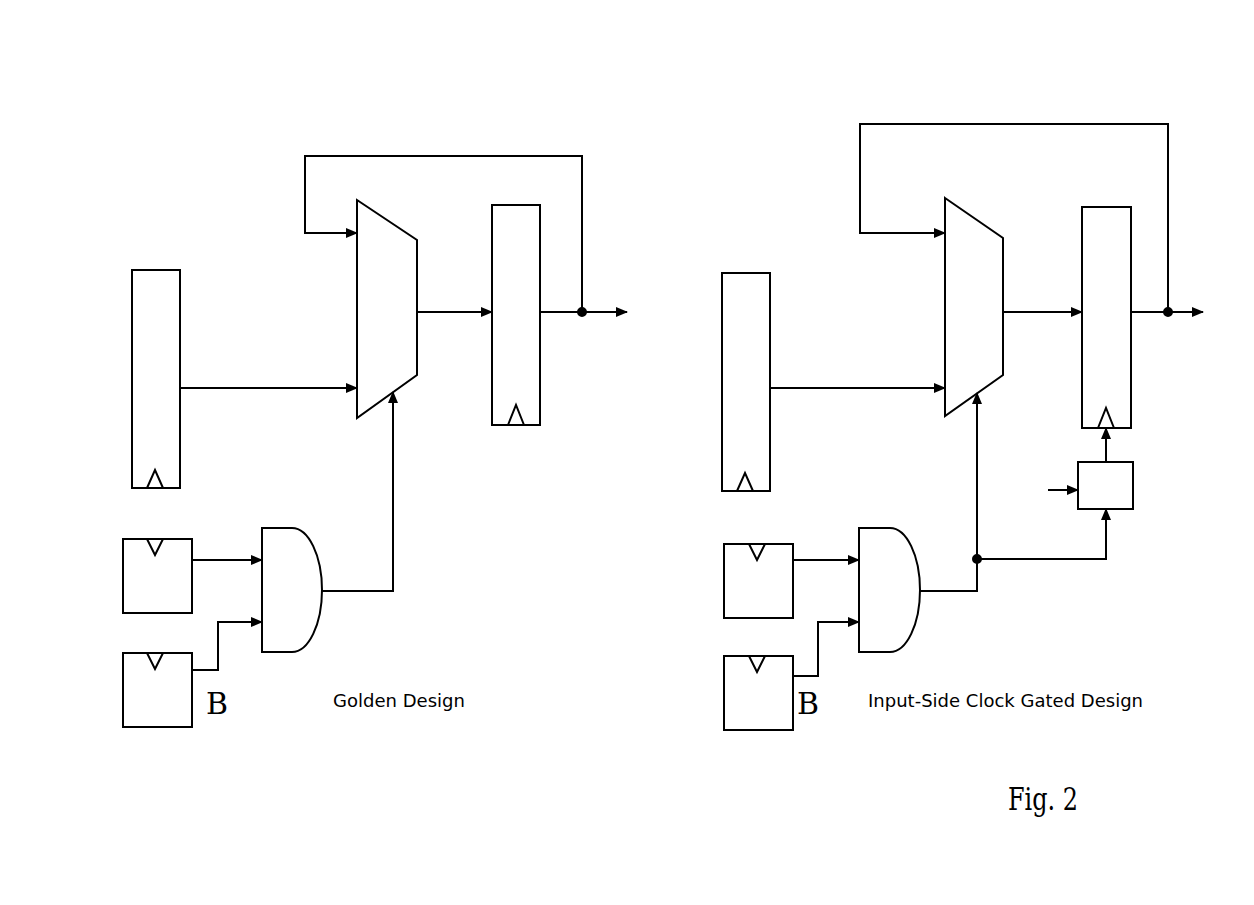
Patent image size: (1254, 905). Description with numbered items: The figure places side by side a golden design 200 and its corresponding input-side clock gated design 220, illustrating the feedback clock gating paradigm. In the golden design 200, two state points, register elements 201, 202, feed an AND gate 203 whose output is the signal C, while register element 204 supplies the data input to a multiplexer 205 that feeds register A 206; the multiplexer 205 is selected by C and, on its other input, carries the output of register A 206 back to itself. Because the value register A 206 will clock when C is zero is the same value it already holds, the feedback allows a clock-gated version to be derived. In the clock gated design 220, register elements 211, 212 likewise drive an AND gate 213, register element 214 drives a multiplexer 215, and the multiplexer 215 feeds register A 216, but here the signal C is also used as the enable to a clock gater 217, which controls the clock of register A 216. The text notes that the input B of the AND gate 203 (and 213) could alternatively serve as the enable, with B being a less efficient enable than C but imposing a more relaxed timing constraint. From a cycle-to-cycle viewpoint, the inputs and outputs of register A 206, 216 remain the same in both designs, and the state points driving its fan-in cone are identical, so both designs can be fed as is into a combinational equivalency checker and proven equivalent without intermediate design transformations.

The golden design 200 is at (386, 120).
The register element 201 is at (170, 652).
The register element 202 is at (169, 538).
The AND gate 203 is at (327, 522).
The register element 204 is at (177, 270).
The multiplexer 205 is at (375, 206).
The register A 206 is at (533, 204).
The register element 211 is at (772, 655).
The register element 212 is at (772, 543).
The AND gate 213 is at (902, 527).
The register element 214 is at (766, 272).
The multiplexer 215 is at (963, 206).
The register A 216 is at (1092, 206).
The clock gater 217 is at (1093, 461).
The input-side clock gated design 220 is at (983, 90).